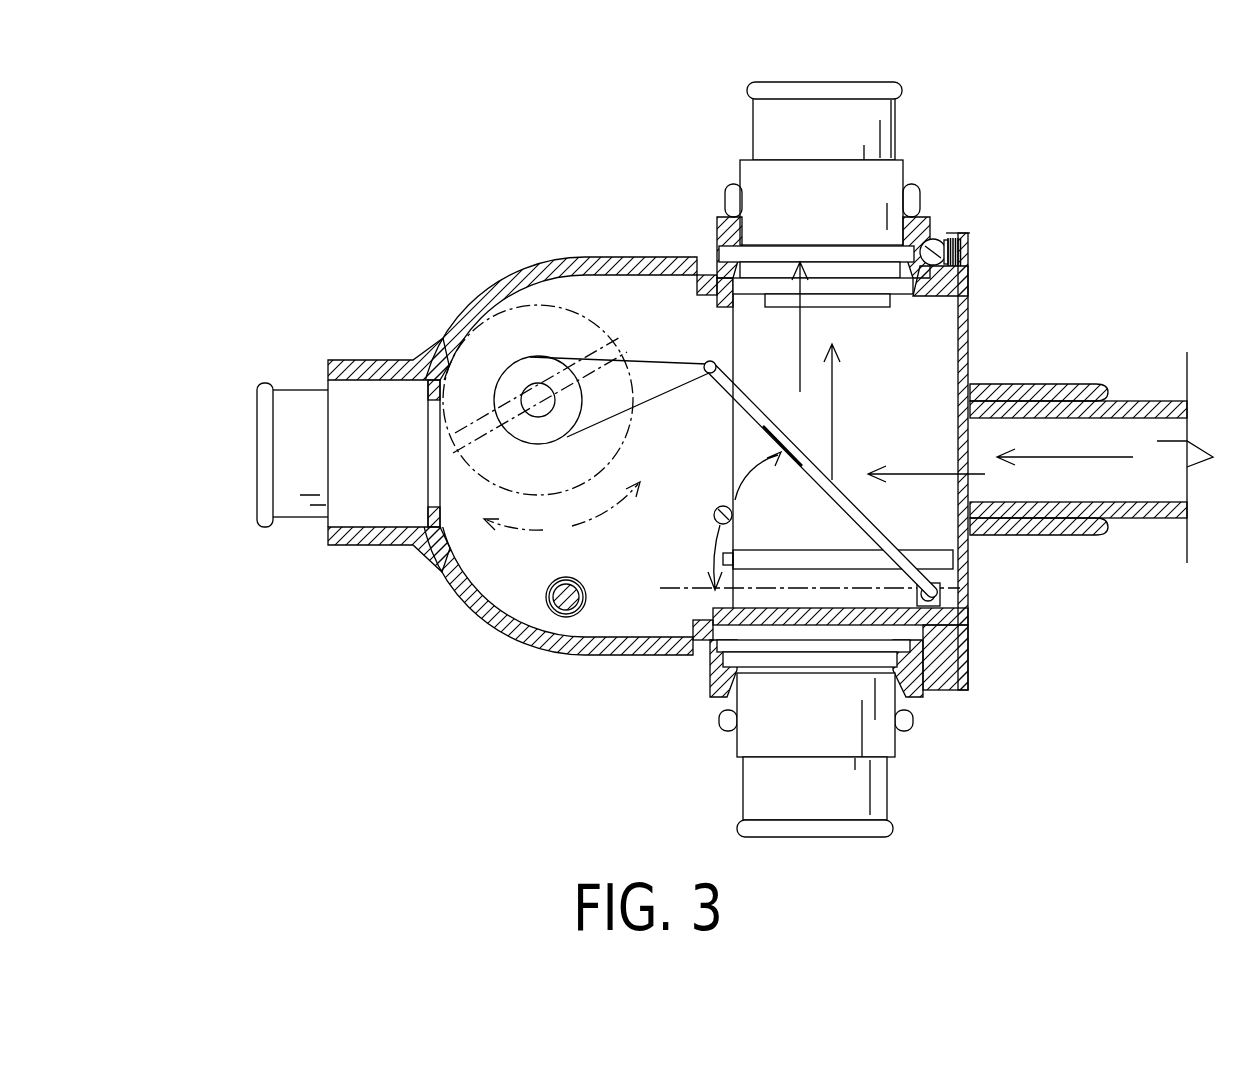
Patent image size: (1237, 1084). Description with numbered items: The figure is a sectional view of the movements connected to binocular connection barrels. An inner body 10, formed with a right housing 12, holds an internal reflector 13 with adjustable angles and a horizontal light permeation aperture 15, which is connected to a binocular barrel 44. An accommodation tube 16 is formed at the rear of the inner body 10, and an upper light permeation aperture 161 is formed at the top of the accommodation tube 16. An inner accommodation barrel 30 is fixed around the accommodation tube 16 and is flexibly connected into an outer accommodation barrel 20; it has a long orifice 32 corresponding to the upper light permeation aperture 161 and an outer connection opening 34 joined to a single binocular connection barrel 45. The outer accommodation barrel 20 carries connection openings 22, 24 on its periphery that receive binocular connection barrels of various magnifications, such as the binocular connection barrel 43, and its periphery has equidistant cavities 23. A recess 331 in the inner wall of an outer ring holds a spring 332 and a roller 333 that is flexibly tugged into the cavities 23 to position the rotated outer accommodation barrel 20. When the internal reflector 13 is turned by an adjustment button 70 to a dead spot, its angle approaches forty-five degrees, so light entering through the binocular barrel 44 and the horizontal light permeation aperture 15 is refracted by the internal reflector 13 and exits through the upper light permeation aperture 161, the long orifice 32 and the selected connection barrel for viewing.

The inner body 10 is at (490, 262).
The right housing 12 is at (545, 262).
The internal reflector 13 is at (938, 578).
The horizontal light permeation aperture 15 is at (963, 443).
The accommodation tube 16 is at (800, 620).
The upper light permeation aperture 161 is at (767, 283).
The outer accommodation barrel 20 is at (910, 700).
The connection opening 22 is at (797, 247).
The cavities 23 is at (925, 240).
The connection opening 24 is at (777, 672).
The inner accommodation barrel 30 is at (933, 657).
The long orifice 32 is at (843, 281).
The recess 331 is at (963, 235).
The spring 332 is at (950, 252).
The roller 333 is at (950, 262).
The outer connection opening 34 is at (427, 473).
The binocular connection barrel 43 is at (830, 782).
The binocular barrel 44 is at (1127, 507).
The binocular connection barrel 45 is at (283, 460).
The adjustment button 70 is at (530, 347).